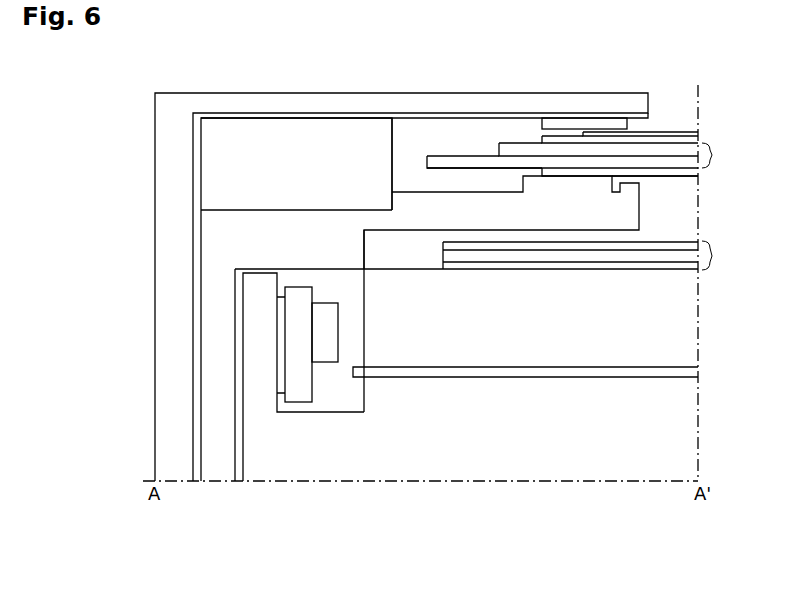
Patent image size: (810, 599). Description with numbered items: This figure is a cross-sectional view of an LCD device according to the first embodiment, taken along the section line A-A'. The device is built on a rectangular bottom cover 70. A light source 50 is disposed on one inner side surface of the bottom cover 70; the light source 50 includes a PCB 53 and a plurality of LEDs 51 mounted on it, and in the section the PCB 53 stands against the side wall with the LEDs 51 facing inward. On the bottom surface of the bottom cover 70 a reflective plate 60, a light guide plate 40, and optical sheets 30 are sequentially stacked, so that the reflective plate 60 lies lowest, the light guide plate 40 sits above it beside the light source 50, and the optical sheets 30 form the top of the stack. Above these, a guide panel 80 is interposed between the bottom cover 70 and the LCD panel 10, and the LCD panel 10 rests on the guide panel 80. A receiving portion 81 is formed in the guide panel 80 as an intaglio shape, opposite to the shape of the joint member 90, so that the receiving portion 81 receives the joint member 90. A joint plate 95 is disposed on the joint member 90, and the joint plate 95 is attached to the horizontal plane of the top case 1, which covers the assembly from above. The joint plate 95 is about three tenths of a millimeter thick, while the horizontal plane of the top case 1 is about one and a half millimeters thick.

The top case 1 is at (568, 100).
The joint plate 95 is at (610, 118).
The joint member 90 is at (300, 145).
The receiving portion 81 is at (255, 208).
The LCD panel 10 is at (582, 154).
The guide panel 80 is at (632, 209).
The optical sheets 30 is at (589, 255).
The light guide plate 40 is at (685, 317).
The reflective plate 60 is at (685, 372).
The bottom cover 70 is at (685, 440).
The light source 50 is at (299, 417).
The PCB 53 is at (301, 393).
The LEDs 51 is at (325, 350).